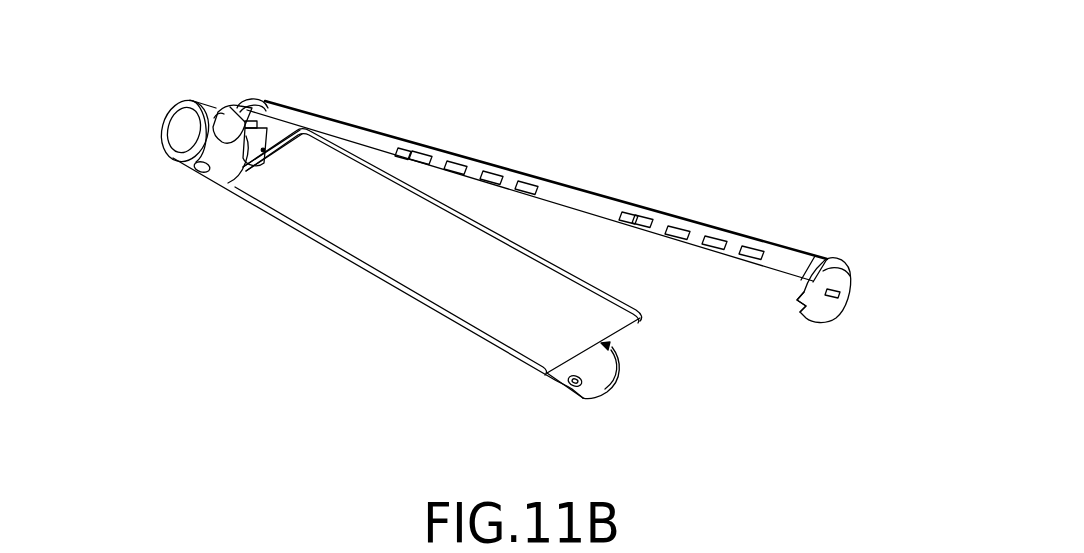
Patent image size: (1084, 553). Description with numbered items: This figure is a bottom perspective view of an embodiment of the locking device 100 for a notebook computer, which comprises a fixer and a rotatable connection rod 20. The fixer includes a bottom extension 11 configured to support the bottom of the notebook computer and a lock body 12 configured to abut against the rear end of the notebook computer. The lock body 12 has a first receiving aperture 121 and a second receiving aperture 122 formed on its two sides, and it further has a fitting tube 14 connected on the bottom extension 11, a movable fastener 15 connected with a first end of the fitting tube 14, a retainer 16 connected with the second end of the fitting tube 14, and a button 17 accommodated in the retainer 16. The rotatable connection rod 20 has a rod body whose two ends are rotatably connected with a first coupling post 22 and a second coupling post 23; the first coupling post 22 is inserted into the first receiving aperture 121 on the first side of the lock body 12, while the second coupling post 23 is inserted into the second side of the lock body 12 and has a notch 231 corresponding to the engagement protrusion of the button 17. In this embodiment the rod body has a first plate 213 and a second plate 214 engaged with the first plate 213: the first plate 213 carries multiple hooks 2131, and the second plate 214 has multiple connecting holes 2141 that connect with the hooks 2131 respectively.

The locking device 100 is at (782, 87).
The bottom extension 11 is at (425, 275).
The lock body 12 is at (162, 153).
The fitting tube 14 is at (268, 128).
The movable fastener 15 is at (178, 130).
The retainer 16 is at (628, 400).
The button 17 is at (618, 378).
The rotatable connection rod 20 is at (537, 199).
The first coupling post 22 is at (232, 120).
The second coupling post 23 is at (846, 255).
The first receiving aperture 121 is at (212, 118).
The second receiving aperture 122 is at (612, 346).
The first plate 213 is at (355, 138).
The second plate 214 is at (733, 250).
The notch 231 is at (802, 298).
The hooks 2131 is at (398, 150).
The connecting holes 2141 is at (642, 224).